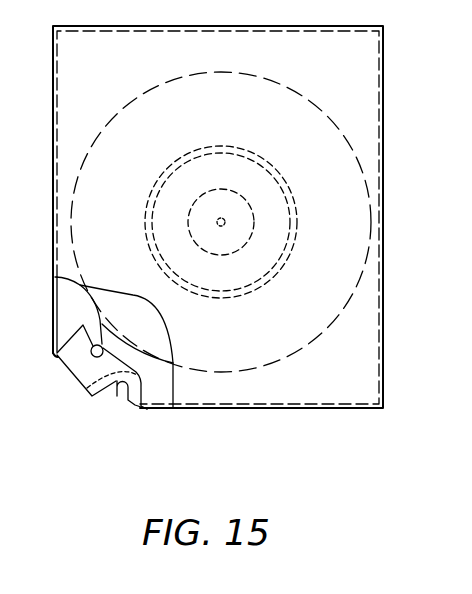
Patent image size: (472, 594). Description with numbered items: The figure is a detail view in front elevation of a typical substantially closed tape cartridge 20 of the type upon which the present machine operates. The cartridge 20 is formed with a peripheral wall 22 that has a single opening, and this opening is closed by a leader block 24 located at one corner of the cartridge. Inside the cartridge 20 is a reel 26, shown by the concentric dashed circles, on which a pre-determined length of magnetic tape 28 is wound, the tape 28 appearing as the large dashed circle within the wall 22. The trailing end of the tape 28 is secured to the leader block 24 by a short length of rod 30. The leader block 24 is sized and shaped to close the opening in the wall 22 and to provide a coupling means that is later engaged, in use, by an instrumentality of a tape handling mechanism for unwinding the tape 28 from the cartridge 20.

The tape cartridge 20 is at (383, 378).
The peripheral wall 22 is at (364, 317).
The leader block 24 is at (110, 391).
The reel 26 is at (297, 197).
The magnetic tape 28 is at (332, 120).
The rod 30 is at (82, 371).